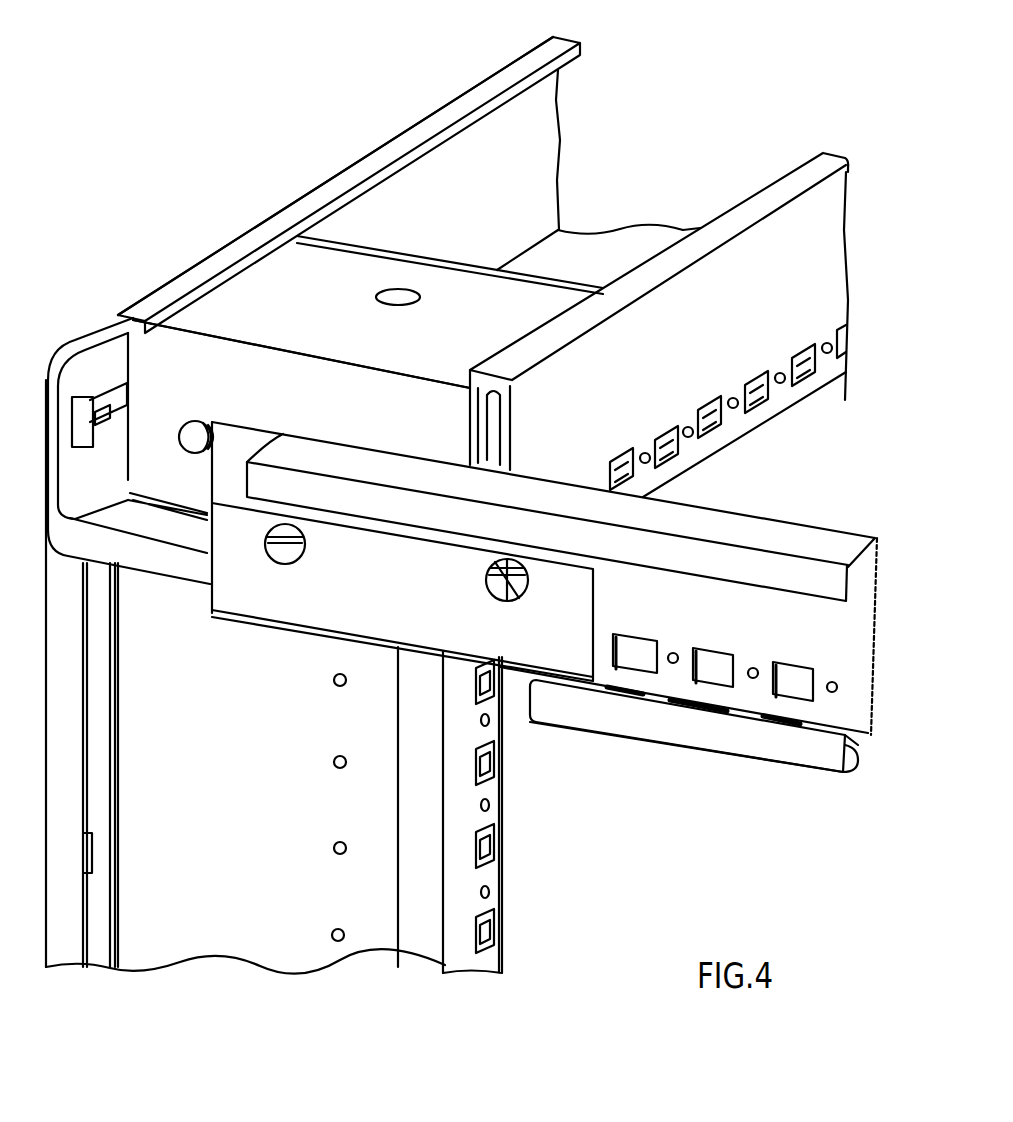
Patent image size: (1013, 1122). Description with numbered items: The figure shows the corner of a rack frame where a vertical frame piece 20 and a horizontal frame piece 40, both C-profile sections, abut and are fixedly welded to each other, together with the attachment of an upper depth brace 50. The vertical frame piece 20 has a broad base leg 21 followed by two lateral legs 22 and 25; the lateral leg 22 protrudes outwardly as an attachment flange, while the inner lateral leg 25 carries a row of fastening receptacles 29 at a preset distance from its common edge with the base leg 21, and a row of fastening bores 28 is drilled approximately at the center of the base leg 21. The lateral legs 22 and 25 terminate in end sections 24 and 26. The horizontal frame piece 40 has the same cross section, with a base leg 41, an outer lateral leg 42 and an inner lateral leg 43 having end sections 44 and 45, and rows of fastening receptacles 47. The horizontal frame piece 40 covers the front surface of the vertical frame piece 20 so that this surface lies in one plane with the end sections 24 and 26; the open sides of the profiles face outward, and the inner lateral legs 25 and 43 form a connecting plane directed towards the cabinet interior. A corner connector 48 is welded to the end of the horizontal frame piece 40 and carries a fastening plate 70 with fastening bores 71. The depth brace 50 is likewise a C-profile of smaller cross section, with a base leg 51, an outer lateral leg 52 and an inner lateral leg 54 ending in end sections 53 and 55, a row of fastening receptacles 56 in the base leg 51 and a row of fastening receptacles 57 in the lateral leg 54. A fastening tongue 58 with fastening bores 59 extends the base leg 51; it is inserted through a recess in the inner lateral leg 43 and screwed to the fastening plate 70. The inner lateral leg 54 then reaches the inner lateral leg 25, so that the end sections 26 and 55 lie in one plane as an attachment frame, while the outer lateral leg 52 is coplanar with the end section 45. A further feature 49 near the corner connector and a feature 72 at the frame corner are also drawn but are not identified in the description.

The vertical frame piece 20 is at (233, 927).
The base leg 21 is at (295, 933).
The lateral leg 22 is at (97, 720).
The end section 24 is at (67, 790).
The lateral leg 25 is at (490, 965).
The end section 26 is at (418, 947).
The fastening bores 28 is at (334, 842).
The fastening receptacles 29 is at (495, 840).
The horizontal frame piece 40 is at (604, 104).
The base leg 41 is at (635, 257).
The lateral leg 42 is at (532, 218).
The lateral leg 43 is at (843, 268).
The end section 44 is at (452, 110).
The end section 45 is at (707, 237).
The fastening receptacles 47 is at (770, 403).
The corner connector 48 is at (277, 270).
The plate hole 49 is at (397, 290).
The upper depth brace 50 is at (695, 760).
The base leg 51 is at (878, 553).
The lateral leg 52 is at (805, 532).
The end section 53 is at (722, 572).
The lateral leg 54 is at (860, 757).
The end section 55 is at (778, 750).
The fastening receptacles 56 is at (783, 662).
The fastening receptacles 57 is at (797, 717).
The fastening tongue 58 is at (307, 610).
The fastening bores 59 is at (305, 548).
The fastening plate 70 is at (298, 388).
The fastening bores 71 is at (195, 420).
The frame corner channel 72 is at (87, 480).